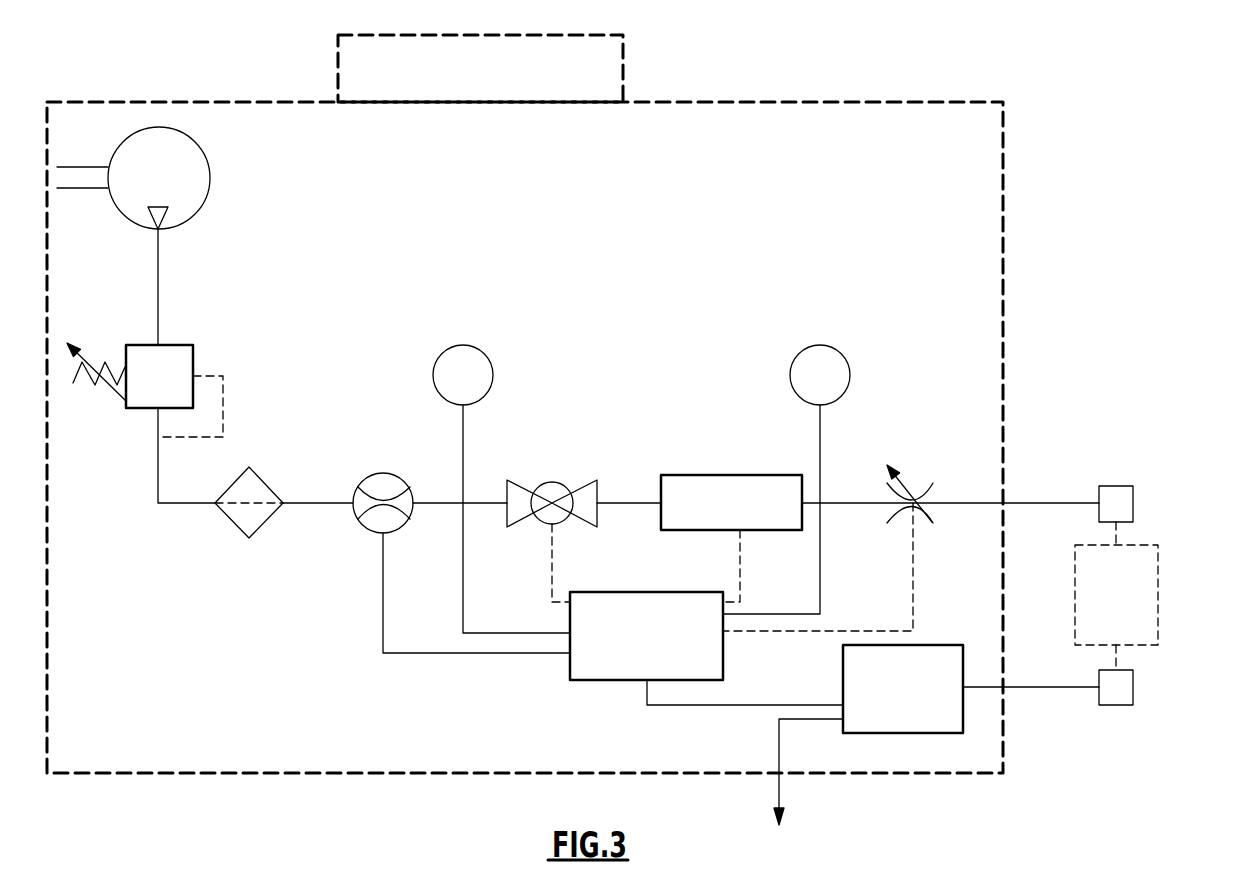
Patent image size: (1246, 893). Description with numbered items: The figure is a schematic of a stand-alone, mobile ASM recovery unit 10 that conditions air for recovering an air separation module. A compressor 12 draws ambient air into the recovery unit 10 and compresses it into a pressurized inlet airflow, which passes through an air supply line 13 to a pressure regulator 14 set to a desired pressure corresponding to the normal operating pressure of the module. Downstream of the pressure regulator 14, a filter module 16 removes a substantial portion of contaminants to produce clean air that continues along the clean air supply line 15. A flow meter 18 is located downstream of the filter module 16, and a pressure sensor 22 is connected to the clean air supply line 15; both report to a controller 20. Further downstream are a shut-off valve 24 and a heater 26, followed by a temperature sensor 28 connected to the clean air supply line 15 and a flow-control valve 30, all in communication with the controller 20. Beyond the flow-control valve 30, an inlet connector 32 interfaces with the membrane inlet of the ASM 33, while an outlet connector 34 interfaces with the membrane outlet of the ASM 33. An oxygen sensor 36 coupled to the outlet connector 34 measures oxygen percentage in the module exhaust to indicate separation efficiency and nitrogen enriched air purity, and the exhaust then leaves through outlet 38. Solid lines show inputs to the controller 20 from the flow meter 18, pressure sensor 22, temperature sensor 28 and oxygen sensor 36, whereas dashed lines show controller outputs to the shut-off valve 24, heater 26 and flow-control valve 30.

The ASM recovery unit 10 is at (783, 102).
The compressor 12 is at (202, 193).
The air supply line 13 is at (158, 282).
The pressure regulator 14 is at (135, 410).
The clean air supply line 15 is at (302, 507).
The filter module 16 is at (232, 523).
The flow meter 18 is at (370, 473).
The controller 20 is at (587, 680).
The pressure sensor 22 is at (495, 378).
The shut-off valve 24 is at (570, 488).
The heater 26 is at (703, 475).
The temperature sensor 28 is at (850, 378).
The flow-control valve 30 is at (932, 488).
The inlet connector 32 is at (1133, 500).
The ASM 33 is at (1158, 557).
The outlet connector 34 is at (1133, 685).
The oxygen sensor 36 is at (908, 733).
The outlet 38 is at (778, 777).